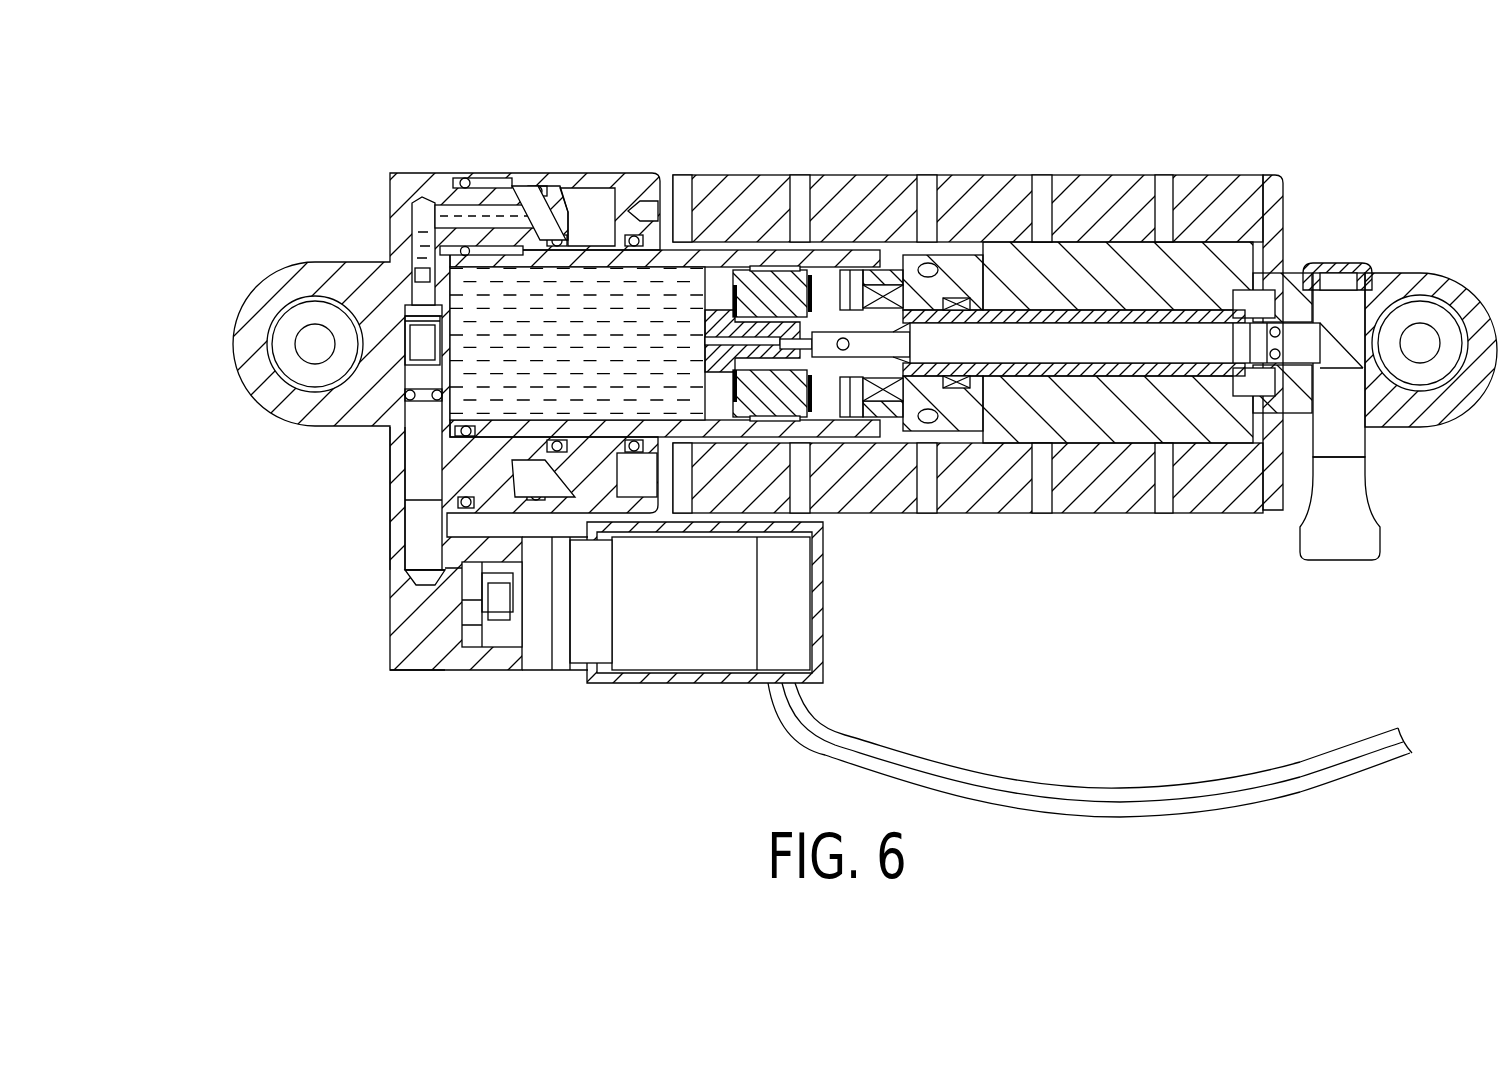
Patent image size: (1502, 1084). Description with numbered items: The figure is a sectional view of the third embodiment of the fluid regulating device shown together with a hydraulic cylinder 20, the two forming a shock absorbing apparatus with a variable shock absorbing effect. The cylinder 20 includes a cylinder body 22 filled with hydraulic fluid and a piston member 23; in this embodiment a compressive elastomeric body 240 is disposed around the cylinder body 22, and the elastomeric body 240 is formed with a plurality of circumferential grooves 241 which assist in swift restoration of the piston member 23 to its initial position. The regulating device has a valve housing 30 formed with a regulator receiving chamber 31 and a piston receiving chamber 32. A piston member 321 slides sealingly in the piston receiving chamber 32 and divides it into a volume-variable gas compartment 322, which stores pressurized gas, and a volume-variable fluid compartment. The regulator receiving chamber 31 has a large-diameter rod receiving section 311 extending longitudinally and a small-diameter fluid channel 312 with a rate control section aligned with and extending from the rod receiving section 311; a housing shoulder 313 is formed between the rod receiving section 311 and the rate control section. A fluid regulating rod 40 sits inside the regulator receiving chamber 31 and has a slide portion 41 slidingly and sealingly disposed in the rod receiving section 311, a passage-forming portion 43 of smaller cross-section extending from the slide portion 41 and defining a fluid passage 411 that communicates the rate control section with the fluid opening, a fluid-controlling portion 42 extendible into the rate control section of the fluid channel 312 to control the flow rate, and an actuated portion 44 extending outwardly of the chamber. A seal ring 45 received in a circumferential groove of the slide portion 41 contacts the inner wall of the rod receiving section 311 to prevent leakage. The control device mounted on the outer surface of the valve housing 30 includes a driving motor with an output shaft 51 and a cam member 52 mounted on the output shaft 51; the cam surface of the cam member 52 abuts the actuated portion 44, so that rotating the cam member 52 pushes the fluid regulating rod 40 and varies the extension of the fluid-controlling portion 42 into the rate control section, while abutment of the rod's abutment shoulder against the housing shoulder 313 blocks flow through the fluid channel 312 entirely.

The hydraulic cylinder 20 is at (898, 174).
The cylinder body 22 is at (703, 287).
The piston member 23 is at (770, 278).
The compressive elastomeric body 240 is at (977, 210).
The circumferential grooves 241 is at (1043, 193).
The valve housing 30 is at (400, 173).
The regulator receiving chamber 31 is at (445, 305).
The rod receiving section 311 is at (393, 447).
The fluid channel 312 is at (423, 218).
The housing shoulder 313 is at (412, 310).
The piston receiving chamber 32 is at (518, 182).
The piston member 321 is at (557, 210).
The gas compartment 322 is at (588, 207).
The fluid regulating rod 40 is at (401, 497).
The slide portion 41 is at (430, 343).
The fluid passage 411 is at (427, 340).
The fluid-controlling portion 42 is at (423, 298).
The passage-forming portion 43 is at (430, 317).
The actuated portion 44 is at (418, 518).
The seal ring 45 is at (405, 393).
The output shaft 51 is at (500, 612).
The cam member 52 is at (435, 618).